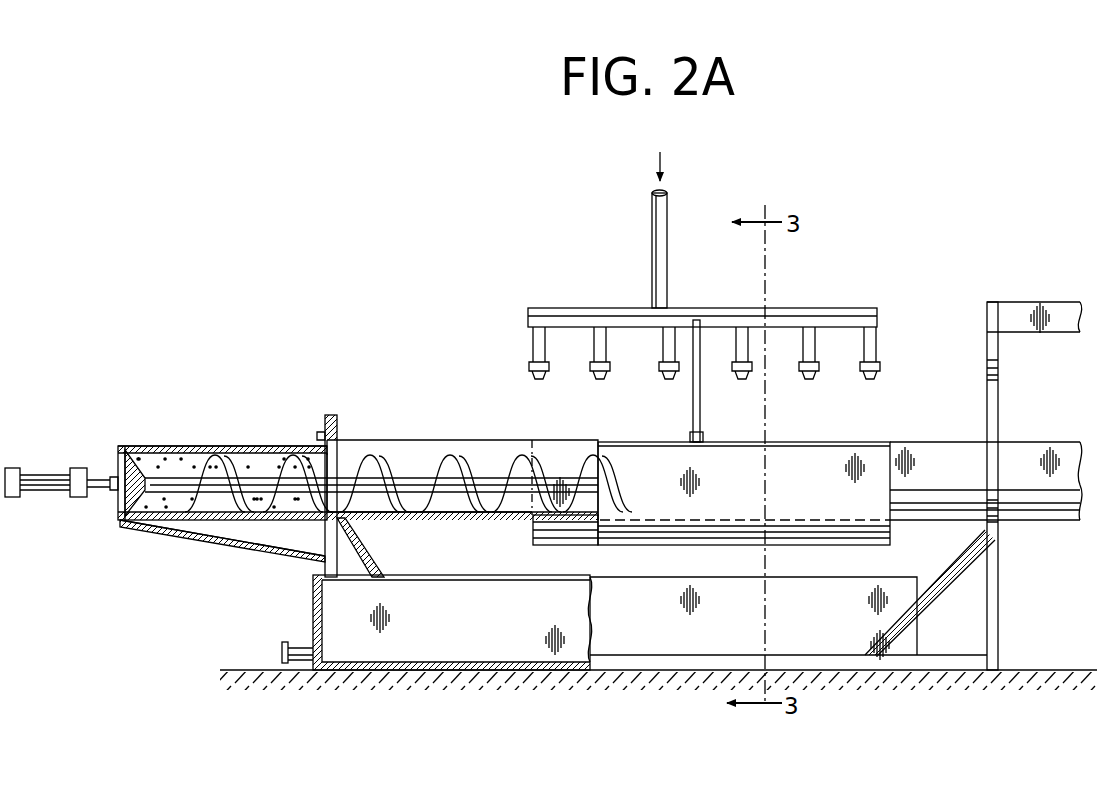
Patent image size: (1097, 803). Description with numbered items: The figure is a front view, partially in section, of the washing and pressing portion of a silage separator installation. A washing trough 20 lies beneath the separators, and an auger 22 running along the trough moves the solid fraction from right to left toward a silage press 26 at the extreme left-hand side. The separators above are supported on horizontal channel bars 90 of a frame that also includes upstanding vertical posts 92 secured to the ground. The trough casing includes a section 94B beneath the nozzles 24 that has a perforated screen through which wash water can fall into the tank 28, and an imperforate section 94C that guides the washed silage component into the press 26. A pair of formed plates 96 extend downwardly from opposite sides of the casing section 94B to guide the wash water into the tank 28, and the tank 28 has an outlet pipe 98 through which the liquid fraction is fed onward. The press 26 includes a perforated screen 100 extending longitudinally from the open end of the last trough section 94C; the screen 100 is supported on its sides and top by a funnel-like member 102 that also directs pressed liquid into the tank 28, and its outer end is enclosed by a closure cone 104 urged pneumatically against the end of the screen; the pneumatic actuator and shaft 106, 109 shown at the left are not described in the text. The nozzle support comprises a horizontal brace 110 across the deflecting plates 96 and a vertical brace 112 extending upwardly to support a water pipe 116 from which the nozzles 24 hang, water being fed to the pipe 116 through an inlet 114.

The washing trough 20 is at (964, 527).
The auger 22 is at (383, 456).
The nozzles 24 is at (669, 376).
The silage press 26 is at (208, 426).
The tank 28 is at (668, 636).
The horizontal channel bars 90 is at (1060, 300).
The vertical posts 92 is at (985, 371).
The second trough section 94B is at (565, 527).
The third trough section 94C is at (393, 520).
The formed plates 96 is at (797, 534).
The outlet pipe 98 is at (300, 648).
The perforated screen 100 is at (207, 507).
The funnel-like member 102 is at (237, 447).
The closure cone 104 is at (118, 500).
The drive motor 106 is at (72, 470).
The perforated housing 109 is at (154, 476).
The horizontal brace 110 is at (703, 433).
The vertical brace 112 is at (693, 396).
The inlet 114 is at (653, 227).
The water pipe 116 is at (610, 316).